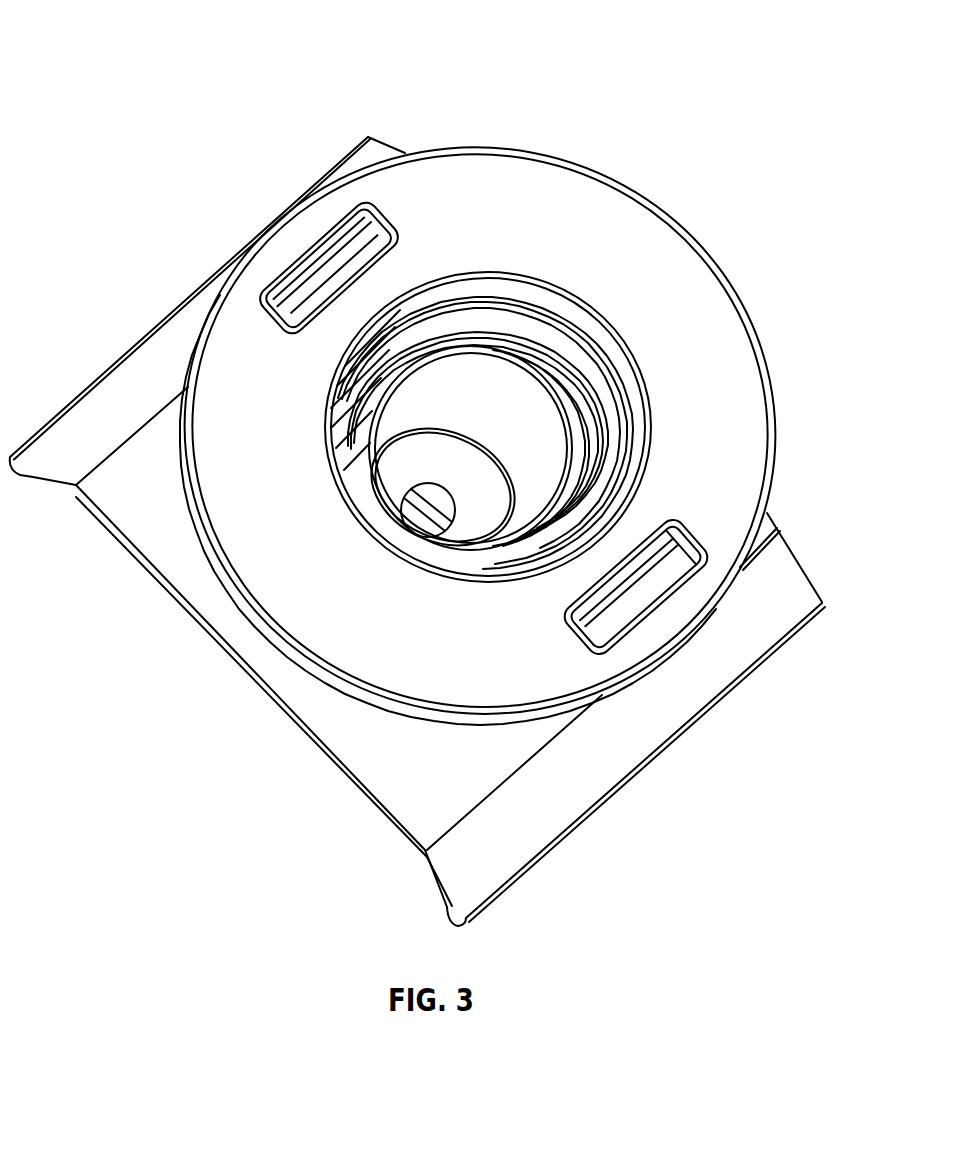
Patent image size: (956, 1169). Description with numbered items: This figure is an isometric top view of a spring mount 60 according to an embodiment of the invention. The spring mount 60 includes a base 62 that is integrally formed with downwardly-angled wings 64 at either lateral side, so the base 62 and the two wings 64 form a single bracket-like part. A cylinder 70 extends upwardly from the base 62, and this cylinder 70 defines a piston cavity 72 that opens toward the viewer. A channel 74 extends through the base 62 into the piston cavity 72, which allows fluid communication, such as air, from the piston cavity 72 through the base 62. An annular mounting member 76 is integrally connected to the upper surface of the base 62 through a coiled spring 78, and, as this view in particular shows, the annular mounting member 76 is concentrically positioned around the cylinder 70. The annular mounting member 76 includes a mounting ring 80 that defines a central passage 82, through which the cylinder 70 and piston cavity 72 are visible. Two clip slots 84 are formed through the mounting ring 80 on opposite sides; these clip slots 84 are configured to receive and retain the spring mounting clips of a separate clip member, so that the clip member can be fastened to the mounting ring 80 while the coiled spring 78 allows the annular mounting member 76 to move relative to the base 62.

The spring mount 60 is at (229, 48).
The base 62 is at (768, 528).
The downwardly-angled wings 64 is at (72, 425).
The cylinder 70 is at (583, 420).
The piston cavity 72 is at (505, 377).
The channel 74 is at (433, 503).
The annular mounting member 76 is at (492, 172).
The coiled spring 78 is at (575, 453).
The mounting ring 80 is at (760, 447).
The central passage 82 is at (512, 418).
The clip slots 84 is at (341, 240).